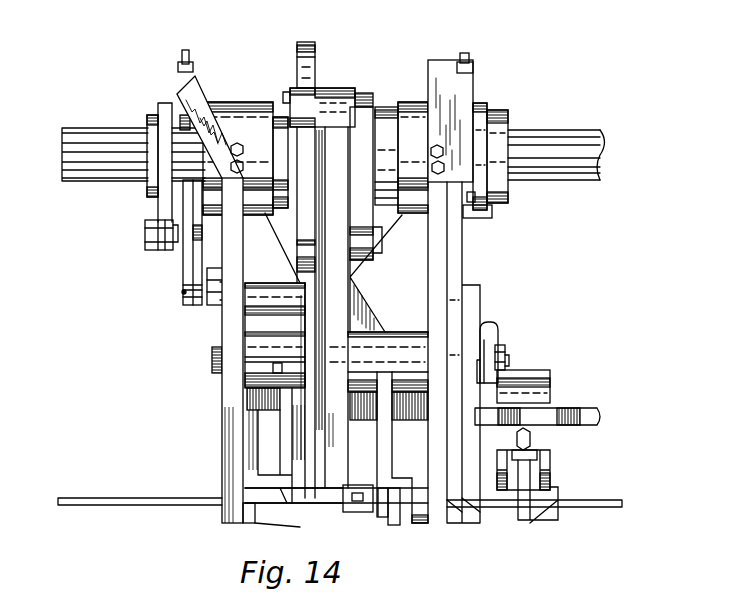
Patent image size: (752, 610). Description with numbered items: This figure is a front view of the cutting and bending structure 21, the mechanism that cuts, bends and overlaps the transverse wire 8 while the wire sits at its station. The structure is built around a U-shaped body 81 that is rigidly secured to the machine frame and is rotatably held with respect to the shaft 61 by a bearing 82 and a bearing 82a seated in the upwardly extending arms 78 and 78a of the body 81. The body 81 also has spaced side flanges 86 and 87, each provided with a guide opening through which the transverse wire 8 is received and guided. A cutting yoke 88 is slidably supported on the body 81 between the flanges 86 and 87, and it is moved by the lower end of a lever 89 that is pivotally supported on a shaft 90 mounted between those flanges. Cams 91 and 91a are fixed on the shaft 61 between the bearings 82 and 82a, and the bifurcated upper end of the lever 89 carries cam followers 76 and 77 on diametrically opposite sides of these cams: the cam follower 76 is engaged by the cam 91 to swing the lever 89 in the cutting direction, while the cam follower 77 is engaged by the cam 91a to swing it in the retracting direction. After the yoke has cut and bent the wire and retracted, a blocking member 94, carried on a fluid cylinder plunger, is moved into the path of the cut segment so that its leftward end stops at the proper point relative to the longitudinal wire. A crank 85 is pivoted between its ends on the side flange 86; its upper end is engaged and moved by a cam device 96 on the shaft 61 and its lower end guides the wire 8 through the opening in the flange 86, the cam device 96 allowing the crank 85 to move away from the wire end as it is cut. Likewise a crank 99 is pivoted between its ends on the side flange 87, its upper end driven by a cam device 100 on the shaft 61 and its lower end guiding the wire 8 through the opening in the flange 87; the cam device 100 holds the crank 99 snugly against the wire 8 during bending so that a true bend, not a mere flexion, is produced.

The transverse wire 8 is at (121, 496).
The cutting and bending structure 21 is at (503, 265).
The shaft 61 is at (92, 137).
The cam follower 76 is at (310, 100).
The cam follower 77 is at (378, 242).
The upwardly extending arm 78 is at (291, 269).
The upwardly extending arm 78a is at (423, 285).
The U-shaped body 81 is at (221, 443).
The bearing 82 is at (245, 115).
The bearing 82a is at (405, 115).
The crank 85 is at (203, 315).
The side flange 86 is at (228, 413).
The side flange 87 is at (443, 260).
The cutting yoke 88 is at (318, 497).
The lever 89 is at (340, 317).
The shaft 90 is at (499, 353).
The cam 91 is at (305, 44).
The cam 91a is at (365, 93).
The blocking member 94 is at (358, 496).
The cam device 96 is at (142, 198).
The crank 99 is at (483, 334).
The cam device 100 is at (499, 104).